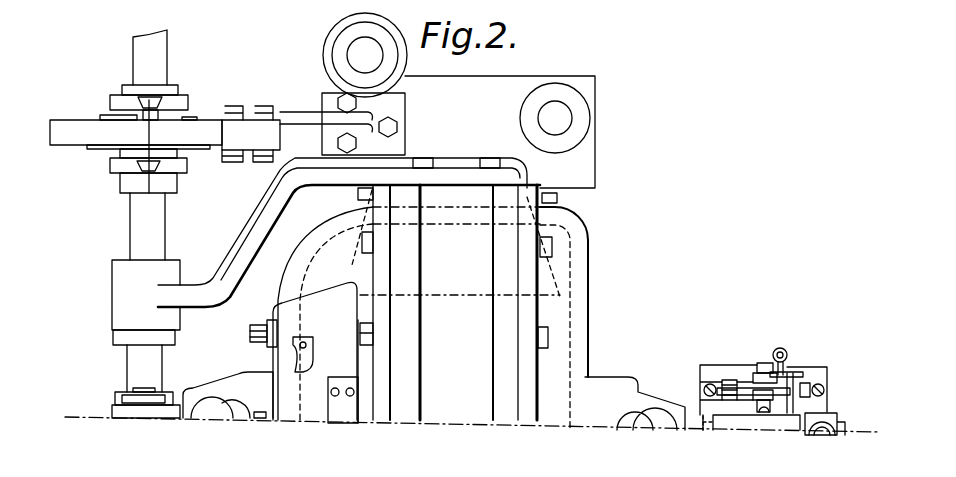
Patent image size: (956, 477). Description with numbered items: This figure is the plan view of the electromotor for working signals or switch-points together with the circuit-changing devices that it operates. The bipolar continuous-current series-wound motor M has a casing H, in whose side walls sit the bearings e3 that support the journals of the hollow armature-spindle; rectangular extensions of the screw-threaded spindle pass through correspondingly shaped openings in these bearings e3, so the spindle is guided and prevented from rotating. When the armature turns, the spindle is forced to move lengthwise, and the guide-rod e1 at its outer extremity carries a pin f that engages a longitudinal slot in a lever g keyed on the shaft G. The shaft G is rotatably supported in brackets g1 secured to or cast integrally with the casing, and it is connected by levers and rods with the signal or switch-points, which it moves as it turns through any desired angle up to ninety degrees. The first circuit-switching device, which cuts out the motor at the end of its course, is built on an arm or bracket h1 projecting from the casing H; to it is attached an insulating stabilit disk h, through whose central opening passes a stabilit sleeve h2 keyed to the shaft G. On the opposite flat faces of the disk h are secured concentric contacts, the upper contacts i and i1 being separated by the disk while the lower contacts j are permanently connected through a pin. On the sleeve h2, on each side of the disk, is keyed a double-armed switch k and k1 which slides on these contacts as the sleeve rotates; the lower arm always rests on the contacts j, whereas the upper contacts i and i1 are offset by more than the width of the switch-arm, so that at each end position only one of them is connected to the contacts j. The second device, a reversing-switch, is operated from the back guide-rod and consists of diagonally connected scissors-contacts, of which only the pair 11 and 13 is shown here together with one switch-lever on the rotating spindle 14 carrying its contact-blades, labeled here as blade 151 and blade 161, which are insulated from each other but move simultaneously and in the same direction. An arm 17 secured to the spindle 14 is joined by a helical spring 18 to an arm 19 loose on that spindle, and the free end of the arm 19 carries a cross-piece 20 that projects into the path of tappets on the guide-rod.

The double-armed switch k1 is at (152, 103).
The upper contact i1 is at (98, 100).
The lower contact j is at (195, 120).
The disk h is at (165, 135).
The arm or bracket h1 is at (300, 112).
The upper contact i is at (100, 150).
The stabilit sleeve h2 is at (177, 189).
The double-armed switch k is at (148, 232).
The shaft G is at (150, 233).
The bracket g1 is at (236, 282).
The motor M is at (433, 294).
The motor-casing H is at (447, 304).
The pin f is at (147, 388).
The lever g is at (120, 398).
The guide-rod e1 is at (140, 419).
The bearing e3 is at (214, 388).
The scissors-contact 11 is at (797, 384).
The scissors-contact 13 is at (730, 380).
The lever 161 is at (745, 388).
The arm 17 is at (785, 358).
The helical spring 18 is at (795, 370).
The arm 19 is at (810, 380).
The cross-piece 20 is at (797, 398).
The rotating spindle 14 is at (765, 410).
The foot 151 is at (778, 410).